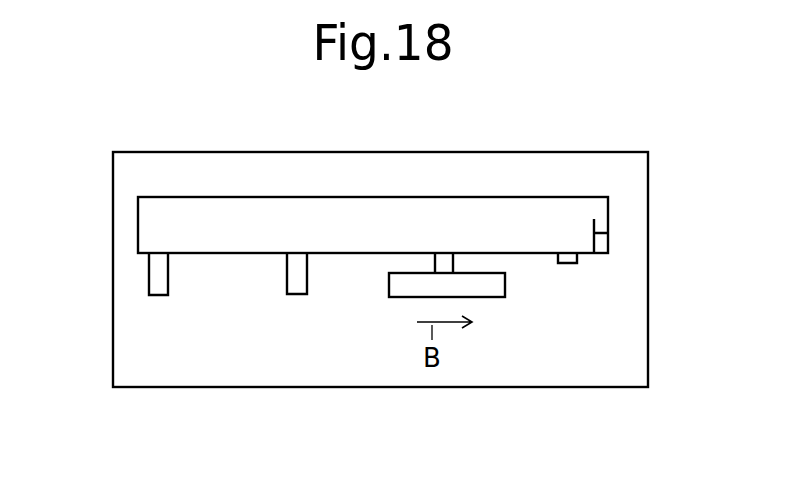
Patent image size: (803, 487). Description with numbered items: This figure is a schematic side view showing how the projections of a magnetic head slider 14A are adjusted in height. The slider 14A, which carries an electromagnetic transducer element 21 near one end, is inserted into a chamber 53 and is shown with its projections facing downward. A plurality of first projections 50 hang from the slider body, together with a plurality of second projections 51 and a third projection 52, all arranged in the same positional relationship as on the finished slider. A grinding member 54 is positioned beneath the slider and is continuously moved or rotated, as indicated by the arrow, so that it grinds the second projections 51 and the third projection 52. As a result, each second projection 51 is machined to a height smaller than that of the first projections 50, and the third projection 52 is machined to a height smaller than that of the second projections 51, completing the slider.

The magnetic head slider 14A is at (545, 207).
The electromagnetic transducer element 21 is at (608, 233).
The first projections 50 is at (157, 284).
The second projections 51 is at (443, 265).
The third projection 52 is at (567, 263).
The chamber 53 is at (648, 207).
The grinding member 54 is at (490, 287).